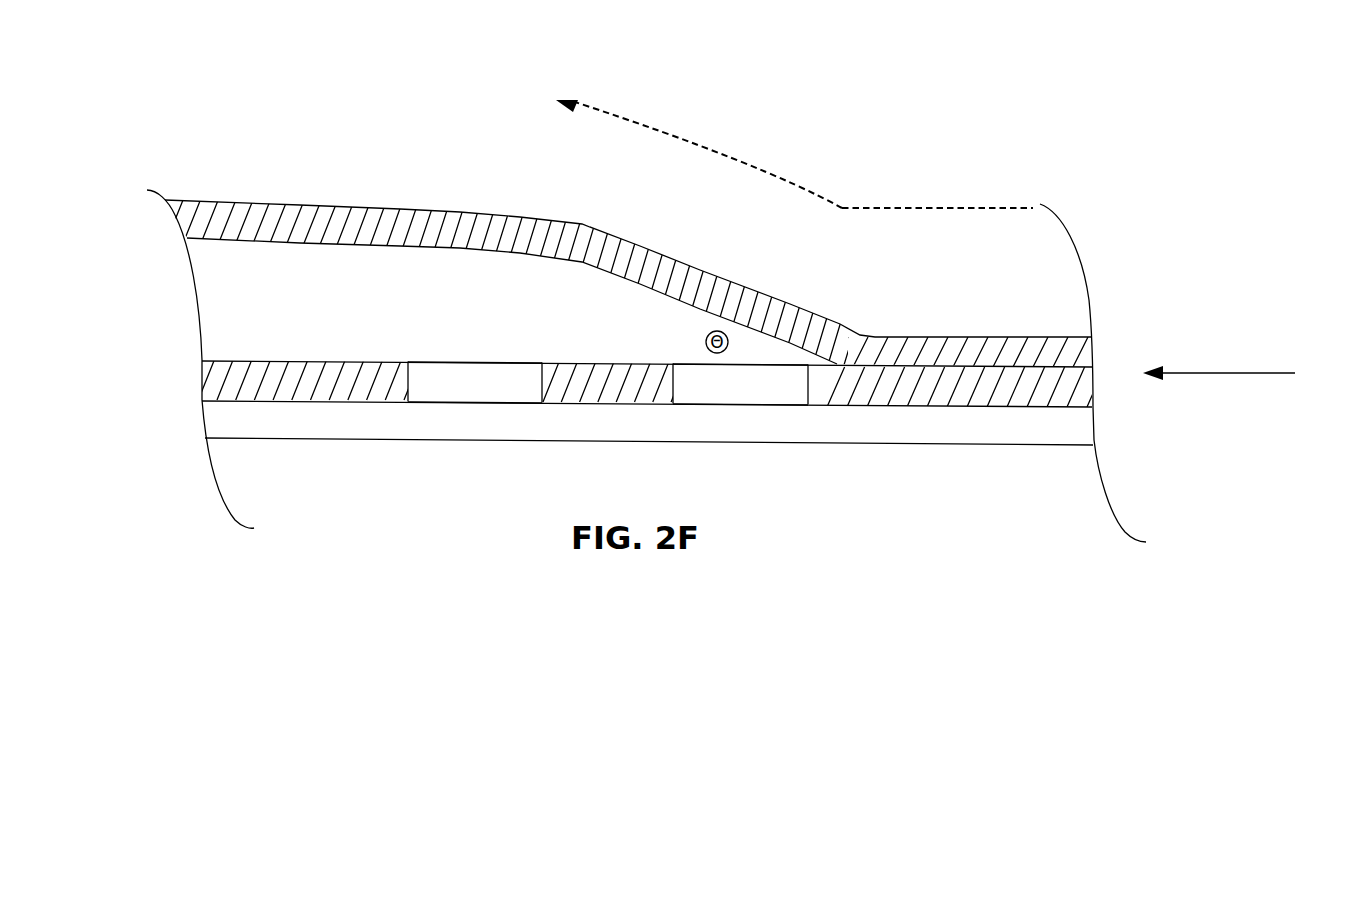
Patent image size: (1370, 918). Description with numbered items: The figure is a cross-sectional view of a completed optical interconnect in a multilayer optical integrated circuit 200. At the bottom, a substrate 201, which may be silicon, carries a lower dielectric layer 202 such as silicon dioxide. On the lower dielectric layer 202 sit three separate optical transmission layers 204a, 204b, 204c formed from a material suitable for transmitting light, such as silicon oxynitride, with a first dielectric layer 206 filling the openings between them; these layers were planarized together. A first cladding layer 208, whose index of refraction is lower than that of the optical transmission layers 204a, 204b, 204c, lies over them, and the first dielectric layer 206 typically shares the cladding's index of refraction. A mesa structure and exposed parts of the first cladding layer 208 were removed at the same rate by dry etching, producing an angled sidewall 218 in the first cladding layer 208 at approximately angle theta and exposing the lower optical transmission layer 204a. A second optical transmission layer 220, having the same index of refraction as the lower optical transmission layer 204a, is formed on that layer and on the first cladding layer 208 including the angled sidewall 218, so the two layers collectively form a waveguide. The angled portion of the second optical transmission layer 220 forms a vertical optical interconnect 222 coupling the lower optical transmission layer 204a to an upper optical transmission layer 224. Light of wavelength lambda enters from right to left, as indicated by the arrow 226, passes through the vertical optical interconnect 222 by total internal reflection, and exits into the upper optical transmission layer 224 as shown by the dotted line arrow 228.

The multilayer optical integrated circuit 200 is at (210, 89).
The substrate 201 is at (804, 482).
The lower dielectric layer 202 is at (732, 435).
The lower optical transmission layer 204a is at (918, 387).
The optical transmission layer 204b is at (577, 383).
The optical transmission layer 204c is at (292, 382).
The first dielectric layer 206 is at (462, 392).
The first cladding layer 208 is at (369, 312).
The angled sidewall 218 is at (628, 300).
The second optical transmission layer 220 is at (933, 348).
The vertical optical interconnect 222 is at (862, 327).
The upper optical transmission layer 224 is at (582, 222).
The arrow 226 is at (1265, 373).
The dotted line arrow 228 is at (841, 207).